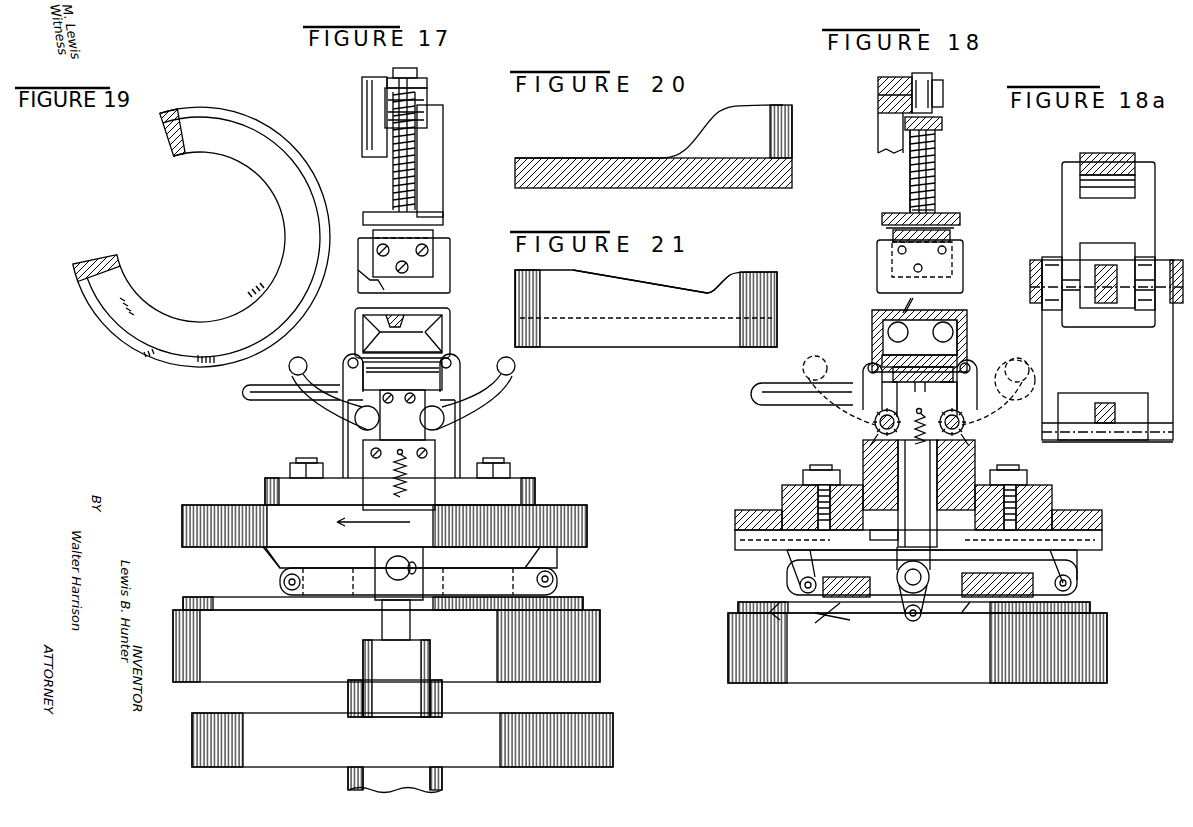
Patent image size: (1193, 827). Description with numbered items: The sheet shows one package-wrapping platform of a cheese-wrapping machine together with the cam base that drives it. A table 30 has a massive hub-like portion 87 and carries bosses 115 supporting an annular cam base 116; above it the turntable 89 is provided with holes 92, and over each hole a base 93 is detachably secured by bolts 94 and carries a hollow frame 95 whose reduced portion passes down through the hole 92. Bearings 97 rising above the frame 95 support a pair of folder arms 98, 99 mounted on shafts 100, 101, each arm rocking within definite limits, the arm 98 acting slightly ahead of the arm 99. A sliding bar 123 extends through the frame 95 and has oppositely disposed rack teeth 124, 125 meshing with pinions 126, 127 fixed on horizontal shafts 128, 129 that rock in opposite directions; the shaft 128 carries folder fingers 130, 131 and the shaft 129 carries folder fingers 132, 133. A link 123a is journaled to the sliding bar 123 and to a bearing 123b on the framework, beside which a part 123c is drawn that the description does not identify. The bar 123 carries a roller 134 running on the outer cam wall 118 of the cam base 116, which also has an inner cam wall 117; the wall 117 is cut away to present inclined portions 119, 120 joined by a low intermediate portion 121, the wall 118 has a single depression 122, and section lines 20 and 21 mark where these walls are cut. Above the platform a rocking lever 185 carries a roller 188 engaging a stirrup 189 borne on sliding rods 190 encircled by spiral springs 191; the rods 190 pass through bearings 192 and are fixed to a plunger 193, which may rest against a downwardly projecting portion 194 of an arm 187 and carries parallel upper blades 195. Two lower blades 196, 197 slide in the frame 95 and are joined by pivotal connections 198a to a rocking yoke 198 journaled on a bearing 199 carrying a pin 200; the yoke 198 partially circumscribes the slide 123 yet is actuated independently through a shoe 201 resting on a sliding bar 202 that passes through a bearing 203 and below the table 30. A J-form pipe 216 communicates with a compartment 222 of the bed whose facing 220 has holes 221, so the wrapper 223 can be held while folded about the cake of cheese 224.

In FIG. 19, the section line 20— 20 is at (290, 292).
In FIG. 19, the section line 21— 21 is at (232, 375).
In FIG. 17, the table 30 is at (568, 713).
In FIG. 17, the hub-like portion 87 is at (442, 777).
In FIG. 17, the turntable 89 is at (384, 526).
In FIG. 18, the turntable 89 is at (1077, 510).
In FIG. 18, the holes 92 is at (868, 545).
In FIG. 17, the base 93 is at (535, 486).
In FIG. 18, the base 93 is at (1050, 486).
In FIG. 17, the bolts 94 is at (302, 463).
In FIG. 18, the bolts 94 is at (814, 470).
In FIG. 17, the hollow frame 95 is at (428, 468).
In FIG. 18, the hollow frame 95 is at (975, 456).
In FIG. 17, the bearings 97 is at (345, 376).
In FIG. 18, the bearings 97 is at (864, 378).
In FIG. 17, the folder arm 98 is at (358, 315).
In FIG. 18, the folder arm 98 is at (877, 310).
In FIG. 17, the folder arm 99 is at (446, 318).
In FIG. 18, the folder arm 99 is at (967, 325).
In FIG. 17, the shaft 100 is at (349, 360).
In FIG. 18, the shaft 100 is at (869, 365).
In FIG. 17, the shaft 101 is at (449, 360).
In FIG. 18, the shaft 101 is at (970, 366).
In FIG. 17, the bosses 115 is at (442, 696).
In FIG. 19, the cam base 116 is at (268, 203).
In FIG. 20, the cam base 116 is at (750, 182).
In FIG. 21, the cam base 116 is at (723, 313).
In FIG. 18, the cam base 116 is at (1091, 609).
In FIG. 19, the cam wall 117 is at (229, 154).
In FIG. 20, the cam wall 117 is at (784, 104).
In FIG. 18, the cam wall 117 is at (750, 602).
In FIG. 19, the cam wall 118 is at (294, 160).
In FIG. 17, the cam wall 118 is at (583, 600).
In FIG. 21, the cam wall 118 is at (778, 272).
In FIG. 18, the cam wall 118 is at (975, 620).
In FIG. 19, the inclined portion 119 is at (262, 289).
In FIG. 20, the inclined portion 119 is at (738, 108).
In FIG. 18, the inclined portion 119 is at (980, 625).
In FIG. 18, the inclined portion 120 is at (789, 620).
In FIG. 19, the intermediate portion 121 is at (189, 327).
In FIG. 20, the intermediate portion 121 is at (578, 152).
In FIG. 19, the depression 122 is at (200, 356).
In FIG. 21, the depression 122 is at (702, 292).
In FIG. 18, the depression 122 is at (890, 623).
In FIG. 18, the sliding bar 123 is at (917, 493).
In FIG. 18A, the sliding bar 123 is at (1112, 265).
In FIG. 17, the link 123a is at (281, 566).
In FIG. 18, the link 123a is at (845, 604).
In FIG. 17, the bearing 123b is at (283, 581).
In FIG. 18, the bearing 123b is at (796, 574).
In FIG. 18A, the bearing 123b is at (1123, 153).
In FIG. 18A, the slide bracket 123c is at (1130, 220).
In FIG. 18, the rack teeth 124 is at (919, 399).
In FIG. 18, the rack teeth 125 is at (922, 446).
In FIG. 18, the pinion 126 is at (870, 446).
In FIG. 18, the pinion 127 is at (972, 446).
In FIG. 17, the shaft 128 is at (357, 421).
In FIG. 18, the shaft 128 is at (875, 424).
In FIG. 17, the shaft 129 is at (444, 420).
In FIG. 18, the shaft 129 is at (966, 424).
In FIG. 17, the folder finger 130 is at (296, 358).
In FIG. 18, the folder finger 131 is at (872, 325).
In FIG. 17, the folder finger 132 is at (515, 366).
In FIG. 18, the folder finger 133 is at (968, 312).
In FIG. 18A, the folder finger 133 is at (1015, 367).
In FIG. 18, the roller 134 is at (918, 622).
In FIG. 17, the rocking lever 185 is at (362, 89).
In FIG. 18, the rocking lever 185 is at (887, 77).
In FIG. 18, the arm 187 is at (961, 219).
In FIG. 17, the roller 188 is at (407, 63).
In FIG. 18, the roller 188 is at (924, 73).
In FIG. 17, the stirrup 189 is at (428, 94).
In FIG. 18, the stirrup 189 is at (943, 122).
In FIG. 17, the sliding rods 190 is at (393, 170).
In FIG. 18, the sliding rods 190 is at (910, 170).
In FIG. 17, the spiral springs 191 is at (430, 175).
In FIG. 18, the spiral springs 191 is at (936, 165).
In FIG. 18, the bearings 192 is at (935, 210).
In FIG. 17, the plunger 193 is at (435, 218).
In FIG. 18, the plunger 193 is at (951, 235).
In FIG. 17, the downwardly projecting portion 194 is at (360, 284).
In FIG. 18, the downwardly projecting portion 194 is at (886, 229).
In FIG. 17, the blades 195 is at (445, 253).
In FIG. 18, the blades 195 is at (964, 262).
In FIG. 17, the lower blade 196 is at (402, 401).
In FIG. 18, the lower blade 196 is at (897, 560).
In FIG. 18A, the lower blade 196 is at (1033, 265).
In FIG. 18, the lower blade 197 is at (913, 318).
In FIG. 18A, the lower blade 197 is at (1176, 260).
In FIG. 17, the rocking yoke 198 is at (462, 570).
In FIG. 18, the rocking yoke 198 is at (980, 575).
In FIG. 18A, the rocking yoke 198 is at (1107, 350).
In FIG. 17, the pivotal connection 198a is at (380, 566).
In FIG. 18A, the pivotal connection 198a is at (1145, 306).
In FIG. 17, the bearing 199 is at (552, 556).
In FIG. 18, the bearing 199 is at (1082, 568).
In FIG. 18A, the bearing 199 is at (1116, 410).
In FIG. 17, the pin 200 is at (553, 579).
In FIG. 18, the pin 200 is at (1072, 585).
In FIG. 18A, the pin 200 is at (1122, 442).
In FIG. 17, the shoe 201 is at (390, 601).
In FIG. 17, the sliding bar 202 is at (410, 627).
In FIG. 18, the sliding bar 202 is at (959, 347).
In FIG. 18A, the sliding bar 202 is at (1015, 318).
In FIG. 17, the bearing 203 is at (396, 678).
In FIG. 17, the pipe 216 is at (264, 400).
In FIG. 18, the pipe 216 is at (772, 390).
In FIG. 17, the facing 220 is at (397, 352).
In FIG. 18, the facing 220 is at (919, 351).
In FIG. 18, the holes 221 is at (920, 332).
In FIG. 18, the compartment 222 is at (935, 393).
In FIG. 17, the wrapper 223 is at (430, 324).
In FIG. 17, the cake of cheese 224 is at (396, 314).